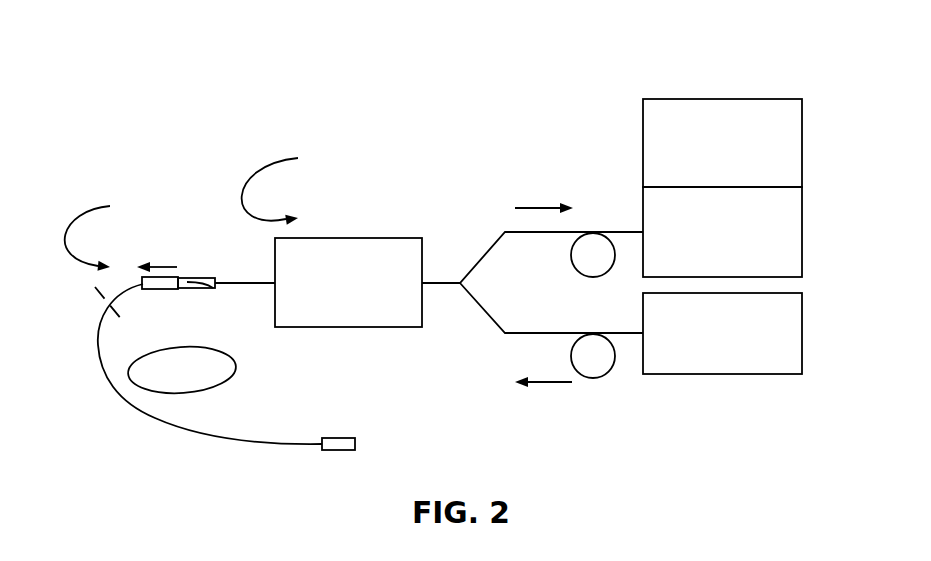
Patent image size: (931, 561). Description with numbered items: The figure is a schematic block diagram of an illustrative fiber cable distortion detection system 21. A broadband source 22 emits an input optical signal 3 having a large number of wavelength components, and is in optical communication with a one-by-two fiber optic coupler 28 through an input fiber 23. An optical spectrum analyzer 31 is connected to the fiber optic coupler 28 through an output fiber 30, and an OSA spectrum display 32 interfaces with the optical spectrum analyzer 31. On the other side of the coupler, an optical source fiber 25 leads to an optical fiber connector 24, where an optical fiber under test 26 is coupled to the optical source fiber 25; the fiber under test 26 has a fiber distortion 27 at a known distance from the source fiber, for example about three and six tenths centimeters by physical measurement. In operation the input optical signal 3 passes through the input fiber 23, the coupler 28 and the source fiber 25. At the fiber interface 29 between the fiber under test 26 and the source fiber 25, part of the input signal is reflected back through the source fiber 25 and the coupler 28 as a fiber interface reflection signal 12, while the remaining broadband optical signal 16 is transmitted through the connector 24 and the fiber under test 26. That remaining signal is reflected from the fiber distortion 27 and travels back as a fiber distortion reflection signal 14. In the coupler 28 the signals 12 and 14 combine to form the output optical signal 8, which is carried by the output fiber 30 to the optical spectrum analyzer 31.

The fiber cable distortion detection system 21 is at (590, 93).
The 1×2 fiber optic coupler 28 is at (347, 238).
The OSA spectrum display 32 is at (803, 141).
The optical spectrum analyzer 31 is at (803, 230).
The broadband source 22 is at (720, 374).
The output fiber 30 is at (607, 232).
The output optical signal 8 is at (535, 208).
The input fiber 23 is at (535, 333).
The input optical signal 3 is at (550, 382).
The optical source fiber 25 is at (247, 283).
The optical fiber connector 24 is at (157, 290).
The fiber interface 29 is at (213, 288).
The remaining broadband optical signal 16 is at (177, 267).
The fiber interface reflection signal 12 is at (298, 158).
The fiber distortion reflection signal 14 is at (110, 206).
The fiber distortion 27 is at (95, 287).
The optical fiber under test 26 is at (105, 354).